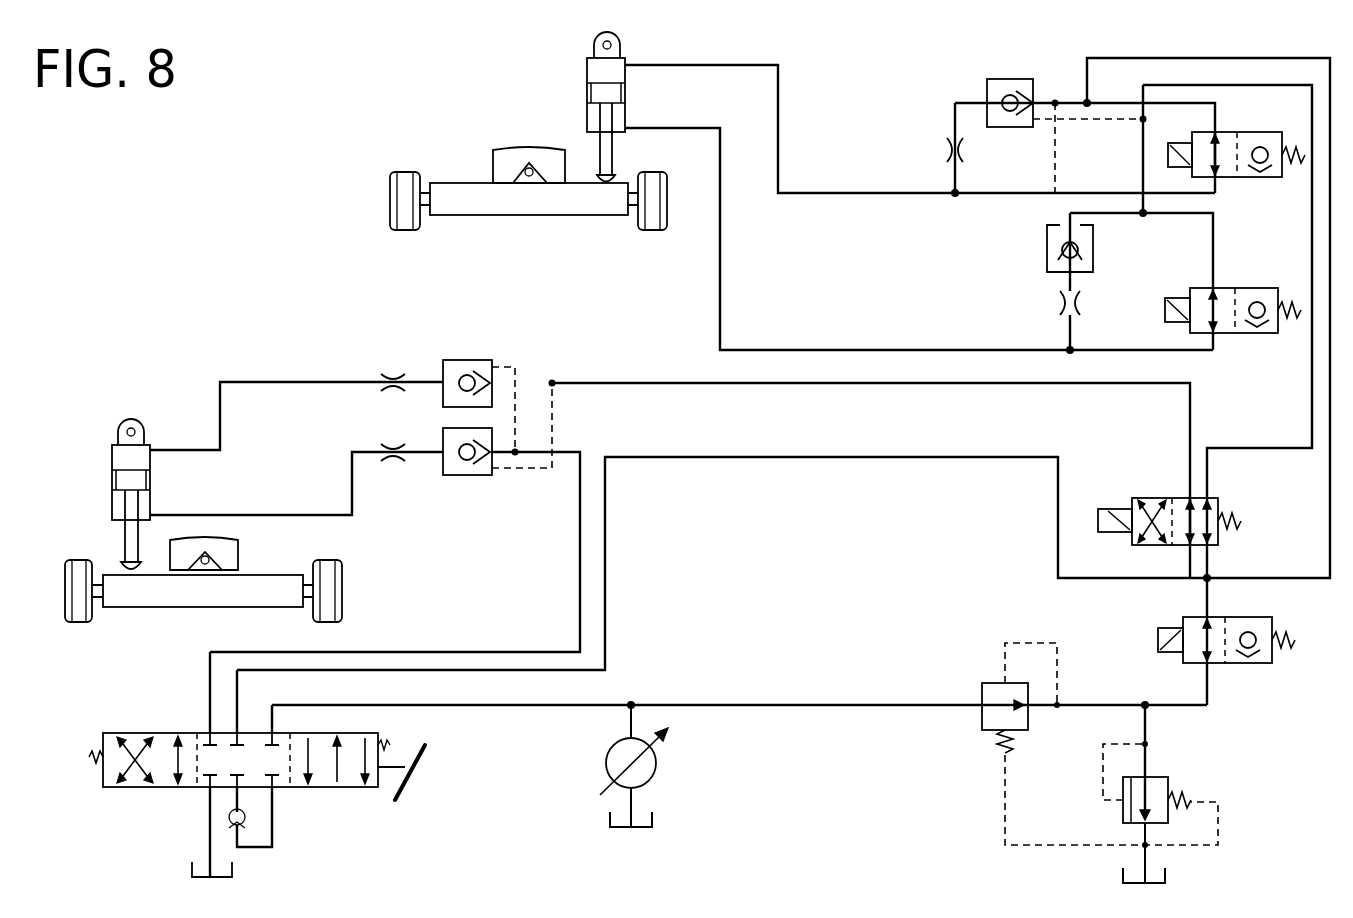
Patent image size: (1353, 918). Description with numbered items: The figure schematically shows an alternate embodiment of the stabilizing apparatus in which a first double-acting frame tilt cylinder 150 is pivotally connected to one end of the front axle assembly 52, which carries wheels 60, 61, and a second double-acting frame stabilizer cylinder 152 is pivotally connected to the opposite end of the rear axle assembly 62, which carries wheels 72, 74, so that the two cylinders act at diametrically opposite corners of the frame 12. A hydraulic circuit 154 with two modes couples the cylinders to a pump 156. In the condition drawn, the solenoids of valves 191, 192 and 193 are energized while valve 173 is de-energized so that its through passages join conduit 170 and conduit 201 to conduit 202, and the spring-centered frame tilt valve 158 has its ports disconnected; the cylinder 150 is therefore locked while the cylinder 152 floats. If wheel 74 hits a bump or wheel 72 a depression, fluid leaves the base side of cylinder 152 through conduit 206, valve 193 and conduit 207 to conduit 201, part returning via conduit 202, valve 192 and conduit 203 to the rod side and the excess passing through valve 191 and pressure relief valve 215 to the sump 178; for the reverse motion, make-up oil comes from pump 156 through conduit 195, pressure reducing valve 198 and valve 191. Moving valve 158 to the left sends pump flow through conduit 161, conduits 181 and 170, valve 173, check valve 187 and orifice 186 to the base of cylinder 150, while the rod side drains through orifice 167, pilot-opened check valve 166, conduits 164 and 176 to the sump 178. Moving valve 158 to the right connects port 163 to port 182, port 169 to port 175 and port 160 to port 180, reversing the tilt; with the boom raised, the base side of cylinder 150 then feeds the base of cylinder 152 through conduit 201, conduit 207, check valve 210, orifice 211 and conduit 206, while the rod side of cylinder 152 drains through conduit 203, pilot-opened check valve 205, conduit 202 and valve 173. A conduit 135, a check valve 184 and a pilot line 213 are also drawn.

The frame 12 is at (537, 152).
The front axle assembly 52 is at (165, 607).
The rear wheel 60 is at (80, 560).
The rear wheel 61 is at (345, 595).
The rear axle assembly 62 is at (498, 216).
The wheel 72 is at (403, 172).
The wheel 74 is at (668, 206).
The hydraulic line 135 is at (885, 390).
The frame tilt cylinder 150 is at (100, 467).
The frame stabilizer cylinder 152 is at (572, 62).
The hydraulic circuit 154 is at (935, 511).
The pump 156 is at (680, 758).
The frame tilt valve 158 is at (135, 733).
The port 160 is at (280, 733).
The conduit 161 is at (532, 705).
The port 163 is at (205, 733).
The conduit 164 is at (490, 640).
The check valve 166 is at (470, 475).
The orifice 167 is at (390, 445).
The port 169 is at (238, 732).
The conduit 170 is at (605, 525).
The valve 173 is at (1155, 498).
The port 175 is at (205, 787).
The conduit 176 is at (208, 837).
The sump 178 is at (192, 873).
The port 180 is at (280, 790).
The conduit 181 is at (275, 825).
The port 182 is at (245, 790).
The check valve 184 is at (243, 826).
The orifice 186 is at (392, 372).
The check valve 187 is at (481, 360).
The valve 191 is at (1258, 663).
The valve 192 is at (1240, 290).
The valve 193 is at (1243, 177).
The conduit 195 is at (885, 705).
The pressure reducing valve 198 is at (1020, 719).
The conduit 201 is at (1210, 562).
The conduit 202 is at (1310, 382).
The conduit 203 is at (835, 350).
The check valve 205 is at (1047, 238).
The conduit 206 is at (745, 68).
The conduit 207 is at (1250, 58).
The check valve 210 is at (1013, 79).
The orifice 211 is at (945, 150).
The pilot line 213 is at (1145, 830).
The pressure relief valve 215 is at (1155, 777).